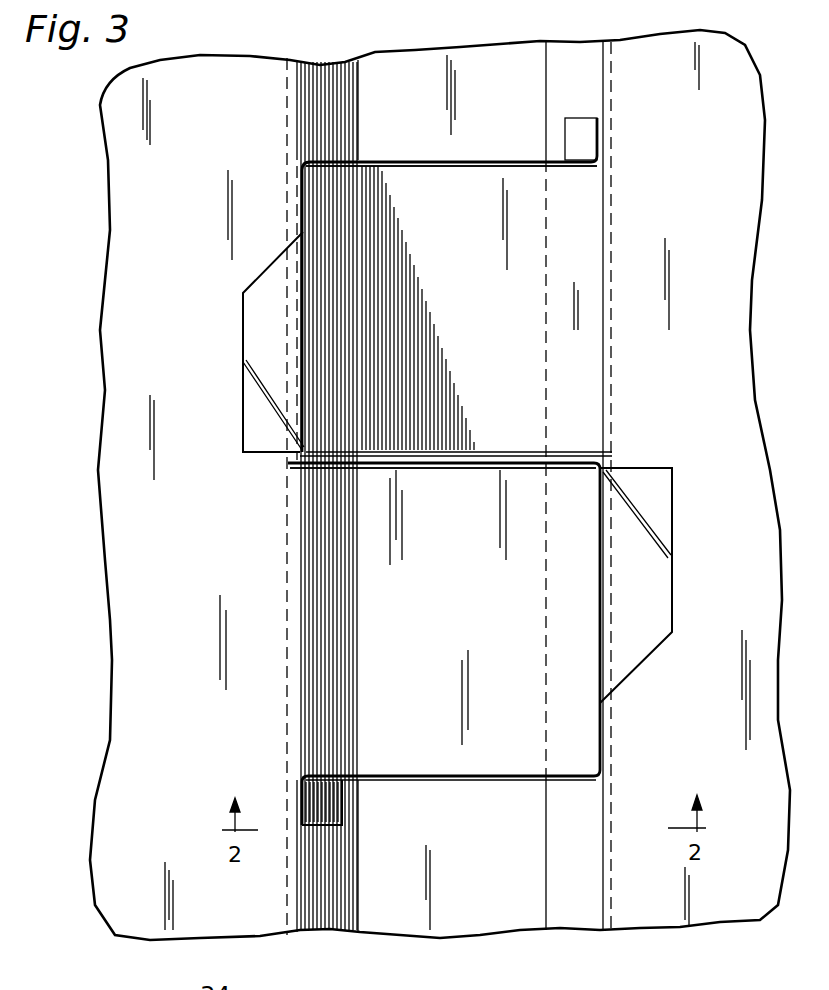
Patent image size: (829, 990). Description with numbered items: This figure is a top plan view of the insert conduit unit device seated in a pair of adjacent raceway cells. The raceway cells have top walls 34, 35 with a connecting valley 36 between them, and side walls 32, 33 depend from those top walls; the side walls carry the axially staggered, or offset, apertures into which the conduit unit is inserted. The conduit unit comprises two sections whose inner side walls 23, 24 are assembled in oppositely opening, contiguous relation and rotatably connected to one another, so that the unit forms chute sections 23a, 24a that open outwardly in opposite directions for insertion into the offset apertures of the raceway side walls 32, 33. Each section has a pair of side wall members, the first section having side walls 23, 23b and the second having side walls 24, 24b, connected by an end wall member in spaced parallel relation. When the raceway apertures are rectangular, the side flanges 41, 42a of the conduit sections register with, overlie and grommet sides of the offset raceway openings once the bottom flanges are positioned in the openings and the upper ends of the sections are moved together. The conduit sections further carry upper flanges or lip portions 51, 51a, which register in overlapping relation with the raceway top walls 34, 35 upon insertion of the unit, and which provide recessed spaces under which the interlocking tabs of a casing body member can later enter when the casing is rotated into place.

The inner side wall 23 is at (430, 773).
The chute section 23a is at (478, 622).
The side wall member 23b is at (443, 465).
The inner side wall 24 is at (490, 450).
The chute section 24a is at (487, 288).
The side wall member 24b is at (465, 164).
The raceway side wall 32 is at (325, 915).
The raceway side wall 33 is at (590, 898).
The raceway top wall 34 is at (190, 712).
The raceway top wall 35 is at (712, 712).
The connecting valley 36 is at (494, 845).
The side flange 41 is at (330, 802).
The side flange 42a is at (584, 137).
The upper flange or lip portion 51 is at (657, 577).
The upper flange or lip portion 51a is at (258, 326).